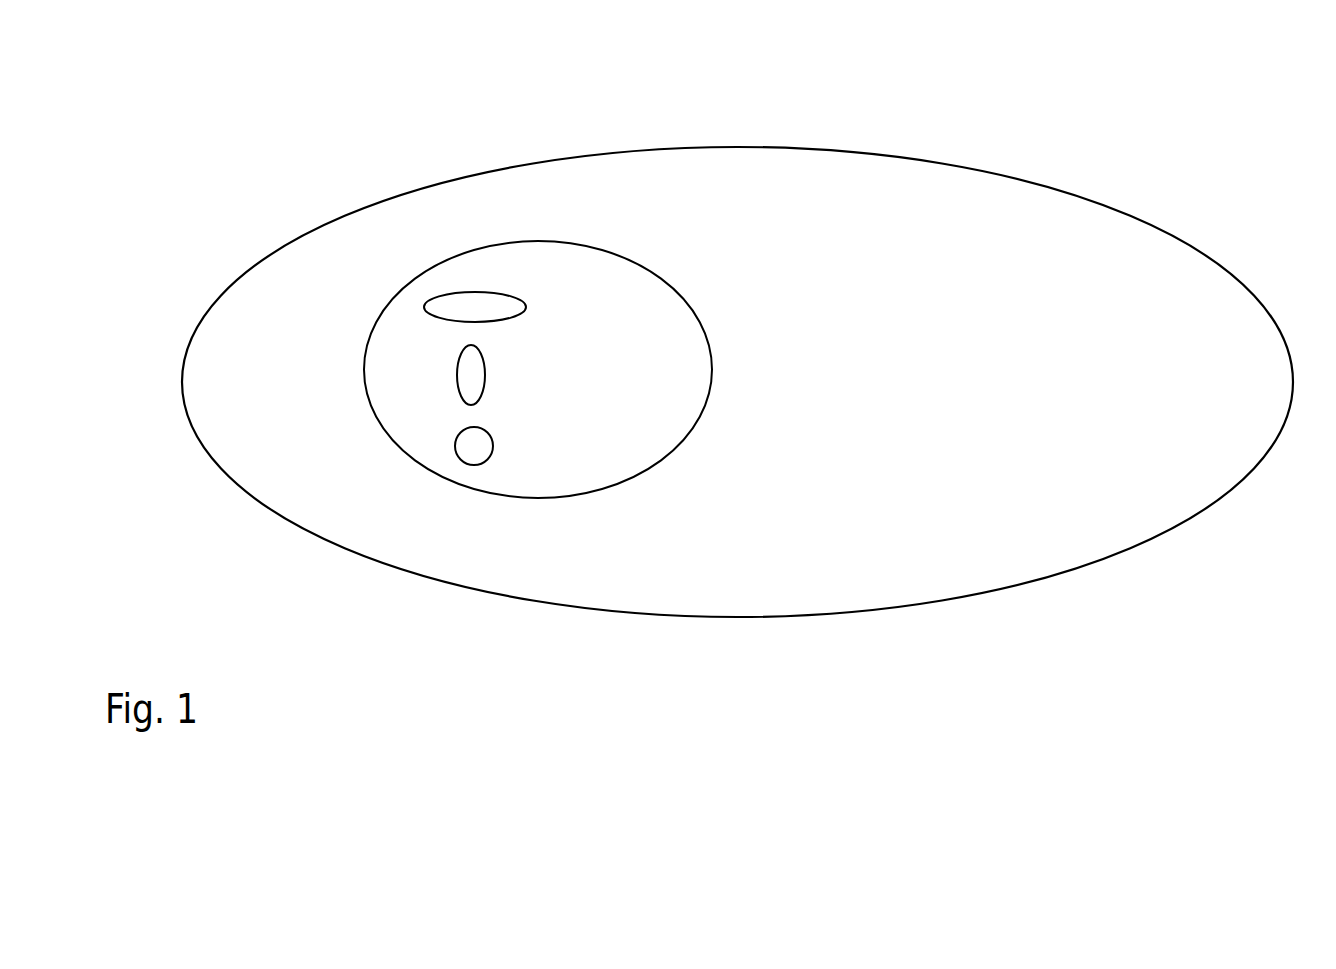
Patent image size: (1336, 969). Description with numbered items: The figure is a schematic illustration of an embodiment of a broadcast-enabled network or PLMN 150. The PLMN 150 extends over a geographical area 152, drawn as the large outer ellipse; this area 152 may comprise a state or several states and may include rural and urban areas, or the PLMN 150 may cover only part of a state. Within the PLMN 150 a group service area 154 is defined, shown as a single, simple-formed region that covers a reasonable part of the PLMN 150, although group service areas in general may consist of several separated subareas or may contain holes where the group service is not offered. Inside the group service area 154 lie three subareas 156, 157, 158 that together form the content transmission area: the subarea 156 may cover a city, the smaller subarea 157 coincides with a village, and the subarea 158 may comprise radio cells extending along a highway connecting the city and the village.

The PLMN 150 is at (1033, 183).
The geographical area 152 is at (1327, 573).
The group service area 154 is at (710, 323).
The subarea 156 is at (530, 306).
The subarea 157 is at (496, 443).
The subarea 158 is at (485, 371).